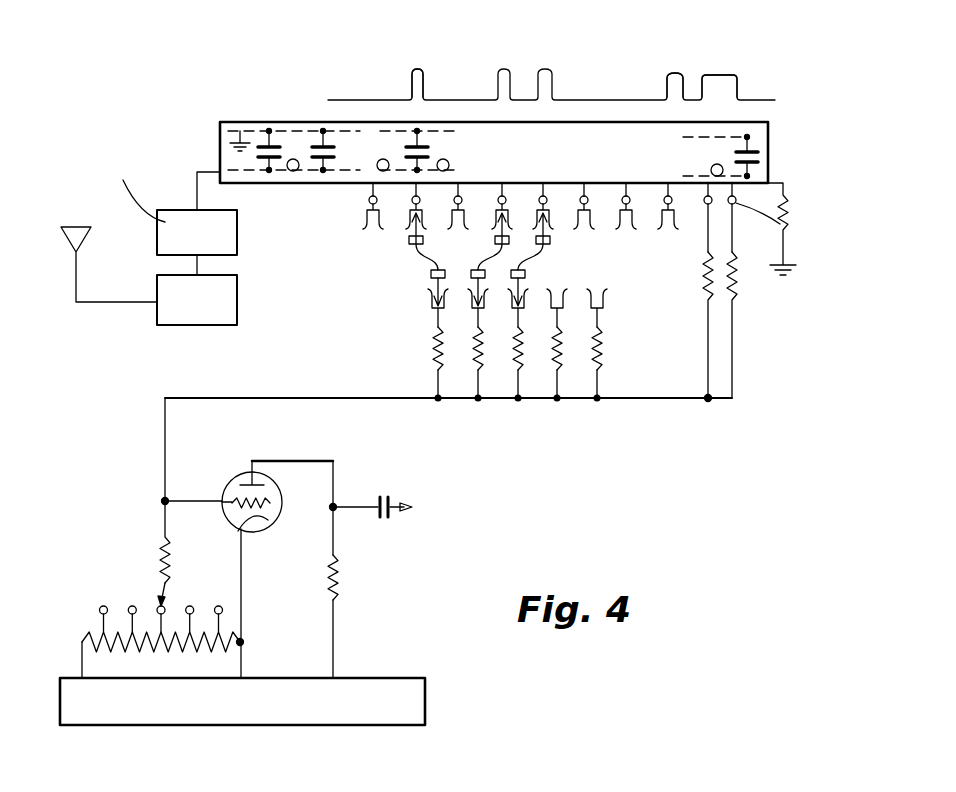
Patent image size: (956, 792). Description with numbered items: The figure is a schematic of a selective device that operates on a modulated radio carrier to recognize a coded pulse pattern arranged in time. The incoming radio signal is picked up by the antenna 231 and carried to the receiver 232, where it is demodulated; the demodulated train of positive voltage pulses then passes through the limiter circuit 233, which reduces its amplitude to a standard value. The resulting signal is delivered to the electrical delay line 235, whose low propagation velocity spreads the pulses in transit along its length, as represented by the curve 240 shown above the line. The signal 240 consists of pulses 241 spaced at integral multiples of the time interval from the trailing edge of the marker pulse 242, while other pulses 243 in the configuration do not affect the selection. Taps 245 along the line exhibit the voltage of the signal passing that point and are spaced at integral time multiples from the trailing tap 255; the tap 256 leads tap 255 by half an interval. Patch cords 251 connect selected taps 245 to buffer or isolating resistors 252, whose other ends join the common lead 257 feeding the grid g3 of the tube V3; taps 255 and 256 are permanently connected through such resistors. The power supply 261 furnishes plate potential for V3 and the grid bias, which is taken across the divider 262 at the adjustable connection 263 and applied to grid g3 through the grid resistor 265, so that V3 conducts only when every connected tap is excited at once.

The antenna 231 is at (80, 226).
The receiver 232 is at (185, 316).
The limiter circuit 233 is at (168, 208).
The electrical delay line 235 is at (219, 128).
The curve 240 is at (594, 99).
The pulses 241 is at (543, 72).
The marker pulse 242 is at (730, 77).
The other pulses 243 is at (680, 73).
The taps 245 is at (368, 200).
The patch cords 251 is at (425, 256).
The buffer or isolating resistors 252 is at (428, 357).
The trailing tap 255 is at (706, 206).
The tap 256 is at (784, 222).
The common lead 257 is at (384, 399).
The power supply 261 is at (386, 692).
The divider 262 is at (706, 277).
The adjustable connection 263 is at (147, 596).
The grid resistor 265 is at (173, 550).
The tube V3 is at (240, 479).
The grid g3 is at (276, 482).